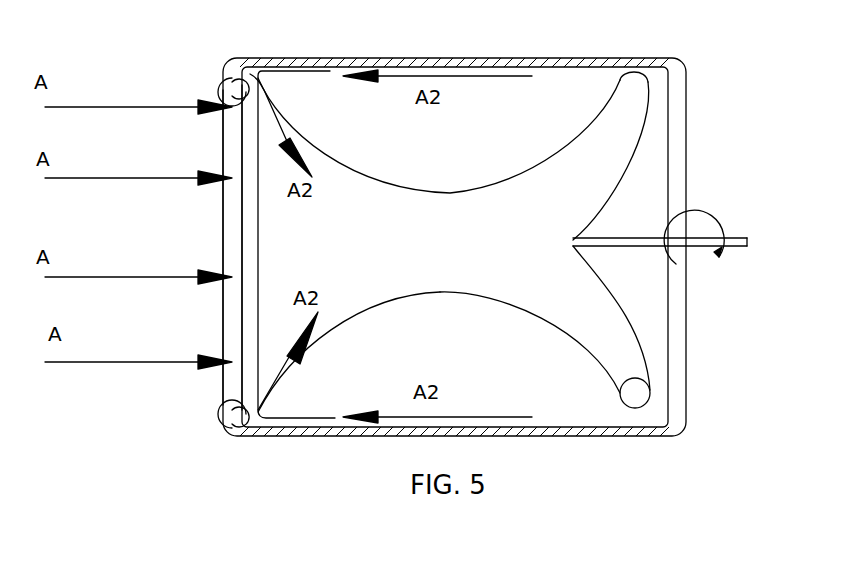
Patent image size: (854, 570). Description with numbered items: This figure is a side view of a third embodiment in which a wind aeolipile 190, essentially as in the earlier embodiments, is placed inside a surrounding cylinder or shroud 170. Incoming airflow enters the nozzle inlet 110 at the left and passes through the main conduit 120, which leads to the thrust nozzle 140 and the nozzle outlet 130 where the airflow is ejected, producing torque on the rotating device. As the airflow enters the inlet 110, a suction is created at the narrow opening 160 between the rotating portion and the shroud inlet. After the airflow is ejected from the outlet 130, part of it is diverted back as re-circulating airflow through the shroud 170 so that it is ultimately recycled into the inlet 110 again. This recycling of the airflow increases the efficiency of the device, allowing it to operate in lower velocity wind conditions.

The nozzle inlet 110 is at (245, 222).
The main conduit 120 is at (345, 257).
The nozzle outlet 130 is at (628, 400).
The thrust nozzle 140 is at (613, 320).
The narrow opening between shroud and aeolipile inlet 160 is at (222, 86).
The cylinder or shroud 170 is at (347, 58).
The aeolipile 190 is at (425, 321).